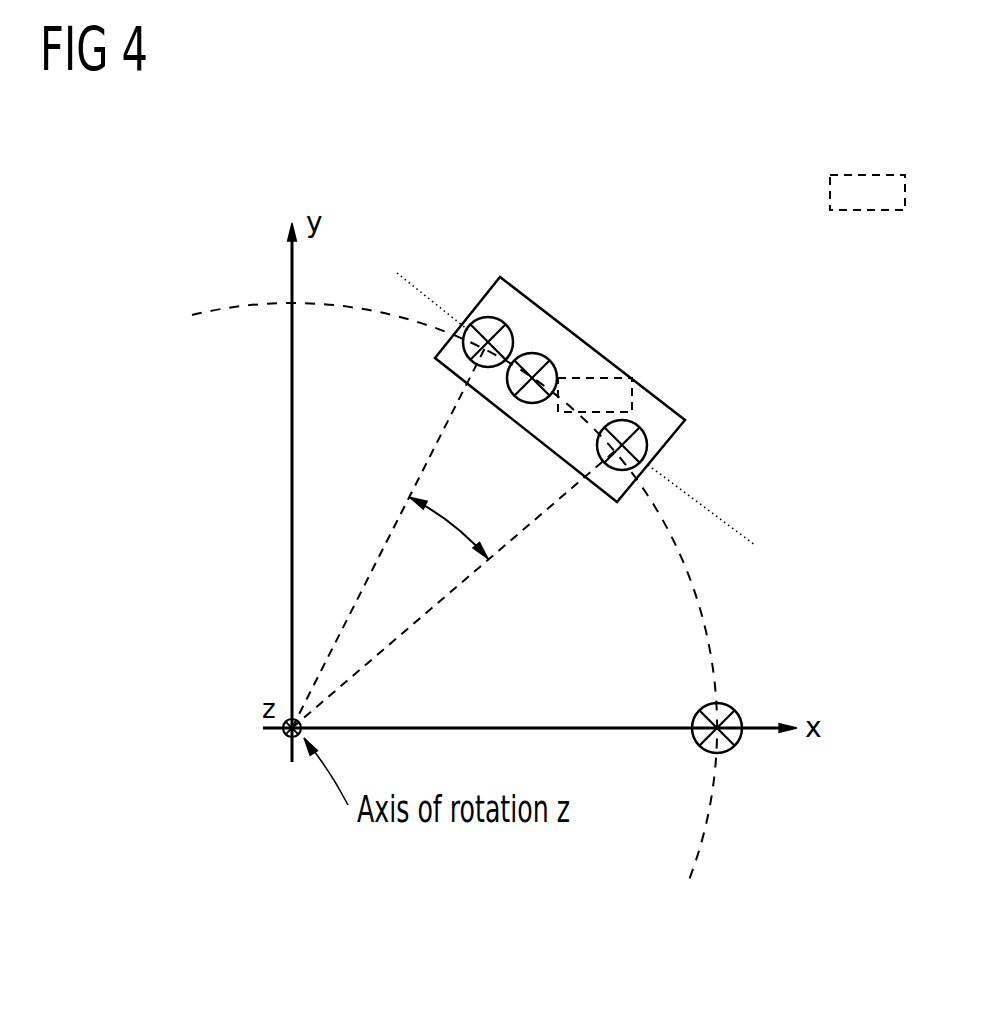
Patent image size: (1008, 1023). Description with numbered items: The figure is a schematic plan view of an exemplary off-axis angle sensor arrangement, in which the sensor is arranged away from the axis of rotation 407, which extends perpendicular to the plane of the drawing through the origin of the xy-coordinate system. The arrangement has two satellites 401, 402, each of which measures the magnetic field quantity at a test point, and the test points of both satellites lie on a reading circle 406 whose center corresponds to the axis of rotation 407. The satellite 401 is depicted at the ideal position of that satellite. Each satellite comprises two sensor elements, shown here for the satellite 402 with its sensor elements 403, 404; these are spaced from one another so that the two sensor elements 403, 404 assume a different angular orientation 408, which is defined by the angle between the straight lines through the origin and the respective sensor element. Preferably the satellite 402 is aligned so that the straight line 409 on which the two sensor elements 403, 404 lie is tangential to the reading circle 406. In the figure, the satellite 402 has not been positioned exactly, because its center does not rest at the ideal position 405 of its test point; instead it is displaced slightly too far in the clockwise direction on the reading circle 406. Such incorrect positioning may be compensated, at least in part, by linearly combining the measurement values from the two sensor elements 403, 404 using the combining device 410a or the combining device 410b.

The satellite 401 is at (690, 713).
The satellite 402 is at (627, 374).
The sensor element 403 is at (630, 444).
The sensor element 404 is at (488, 338).
The ideal position 405 is at (550, 362).
The reading circle 406 is at (199, 316).
The axis of rotation 407 is at (282, 740).
The angular orientation 408 is at (457, 535).
The straight line 409 is at (723, 528).
The combining device 410a is at (595, 394).
The combining device 410b is at (867, 192).